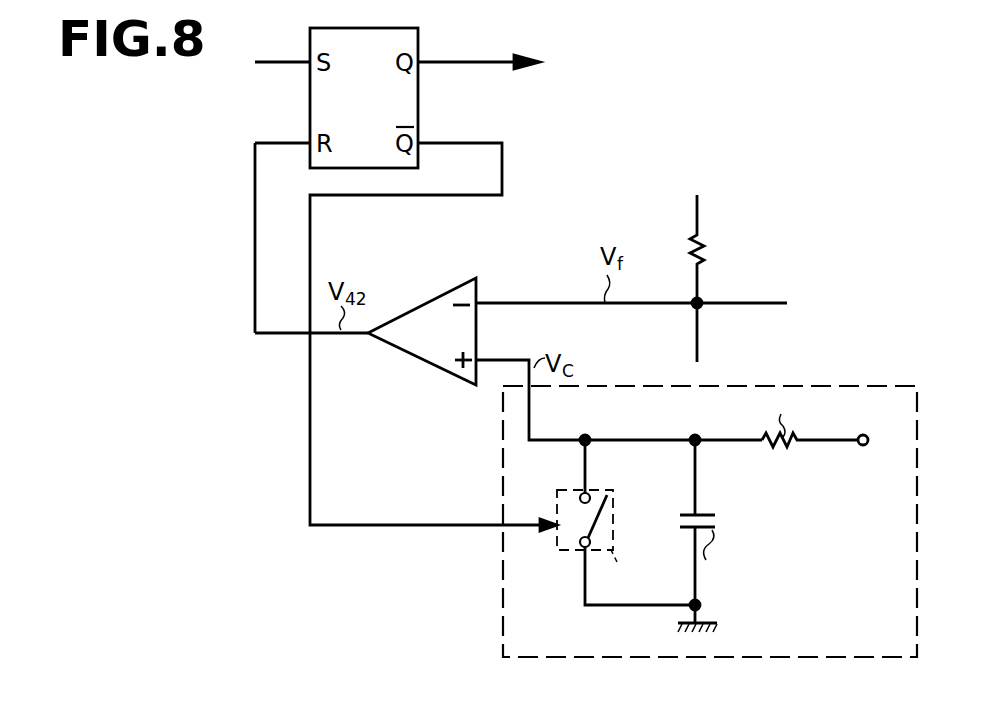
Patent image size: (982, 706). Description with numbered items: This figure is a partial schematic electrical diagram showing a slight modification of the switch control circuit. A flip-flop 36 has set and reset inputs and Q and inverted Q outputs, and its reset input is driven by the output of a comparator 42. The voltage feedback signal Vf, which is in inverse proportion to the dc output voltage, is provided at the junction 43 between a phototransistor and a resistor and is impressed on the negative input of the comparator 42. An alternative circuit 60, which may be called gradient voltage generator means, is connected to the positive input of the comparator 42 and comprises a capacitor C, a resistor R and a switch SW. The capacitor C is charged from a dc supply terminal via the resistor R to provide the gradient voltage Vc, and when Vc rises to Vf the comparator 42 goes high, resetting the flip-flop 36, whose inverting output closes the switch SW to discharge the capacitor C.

The flip-flop 36 is at (421, 48).
The comparator 42 is at (427, 299).
The junction 43 is at (701, 300).
The gradient voltage generator circuit 60 is at (748, 385).